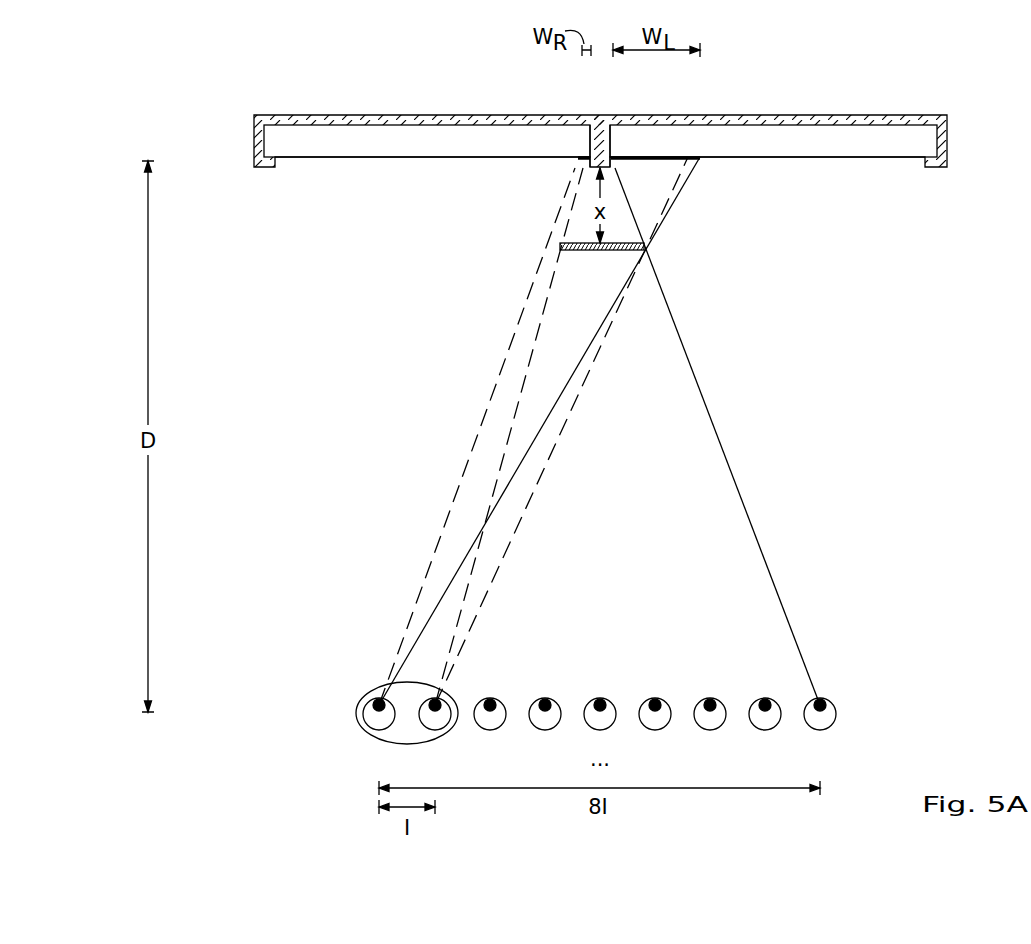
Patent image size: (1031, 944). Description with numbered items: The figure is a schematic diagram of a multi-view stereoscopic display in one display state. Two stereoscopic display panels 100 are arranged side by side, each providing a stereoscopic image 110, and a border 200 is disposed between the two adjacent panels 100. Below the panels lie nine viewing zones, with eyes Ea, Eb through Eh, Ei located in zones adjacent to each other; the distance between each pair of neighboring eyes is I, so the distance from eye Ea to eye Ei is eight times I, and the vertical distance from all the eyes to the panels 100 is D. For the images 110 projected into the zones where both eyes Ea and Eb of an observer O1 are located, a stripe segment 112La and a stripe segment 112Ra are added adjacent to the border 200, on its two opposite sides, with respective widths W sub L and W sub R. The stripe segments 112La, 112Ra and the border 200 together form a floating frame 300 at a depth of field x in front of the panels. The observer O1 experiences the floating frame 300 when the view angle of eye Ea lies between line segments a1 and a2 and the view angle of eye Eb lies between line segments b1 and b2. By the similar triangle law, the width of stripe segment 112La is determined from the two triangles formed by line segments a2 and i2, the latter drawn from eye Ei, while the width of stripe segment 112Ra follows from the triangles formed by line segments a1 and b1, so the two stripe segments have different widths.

The stereoscopic display panel 100 is at (307, 140).
The stereoscopic image 110 is at (381, 154).
The stripe segment 112Ra is at (584, 154).
The stripe segment 112La is at (642, 154).
The border 200 is at (603, 117).
The floating frame 300 is at (625, 252).
The observer O1 is at (357, 710).
The line segment a1 is at (395, 652).
The line segment a2 is at (427, 617).
The line segment b1 is at (470, 565).
The line segment b2 is at (515, 528).
The line segment i2 is at (808, 653).
The eye Ea is at (379, 735).
The eye Eb is at (435, 735).
The eye Eh is at (765, 735).
The eye Ei is at (820, 735).